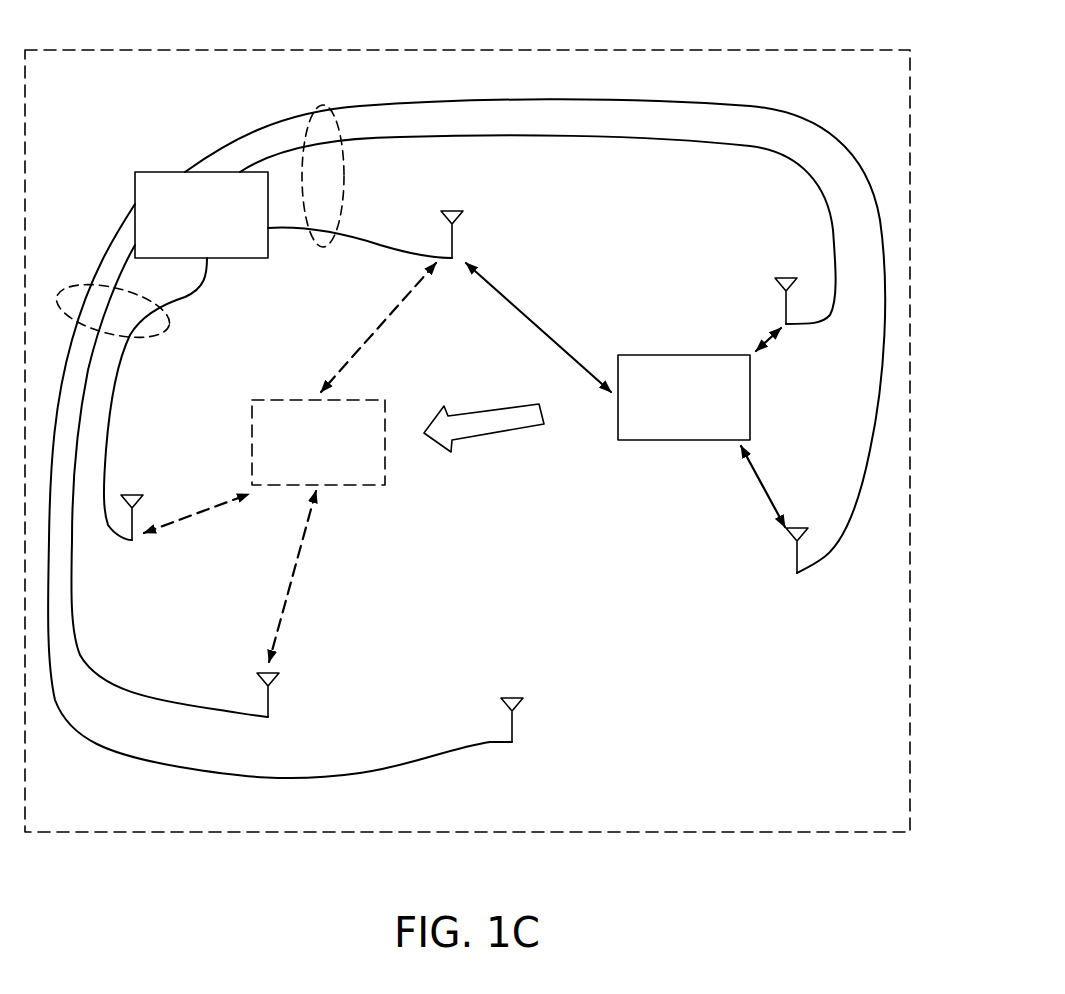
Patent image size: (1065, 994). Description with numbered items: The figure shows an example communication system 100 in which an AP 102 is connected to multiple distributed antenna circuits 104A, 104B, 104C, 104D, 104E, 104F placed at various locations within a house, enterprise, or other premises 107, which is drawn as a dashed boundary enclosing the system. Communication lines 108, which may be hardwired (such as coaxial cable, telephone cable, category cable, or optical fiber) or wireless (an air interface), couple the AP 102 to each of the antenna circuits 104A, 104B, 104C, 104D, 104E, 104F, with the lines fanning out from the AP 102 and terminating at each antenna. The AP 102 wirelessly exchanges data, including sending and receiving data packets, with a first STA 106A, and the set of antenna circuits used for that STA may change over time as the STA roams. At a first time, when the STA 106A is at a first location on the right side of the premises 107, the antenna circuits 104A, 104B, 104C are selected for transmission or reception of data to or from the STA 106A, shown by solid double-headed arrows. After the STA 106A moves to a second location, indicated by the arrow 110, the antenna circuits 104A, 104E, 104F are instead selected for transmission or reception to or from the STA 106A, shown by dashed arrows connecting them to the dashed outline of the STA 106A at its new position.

The communication system 100 is at (171, 107).
The AP 102 is at (182, 244).
The antenna circuit 104A is at (477, 226).
The antenna circuit 104B is at (760, 292).
The antenna circuit 104C is at (776, 543).
The antenna circuit 104D is at (491, 711).
The antenna circuit 104E is at (288, 691).
The antenna circuit 104F is at (160, 506).
The first STA 106A is at (657, 425).
The premises 107 is at (727, 50).
The communication lines 108 is at (323, 247).
The arrow 110 is at (497, 436).